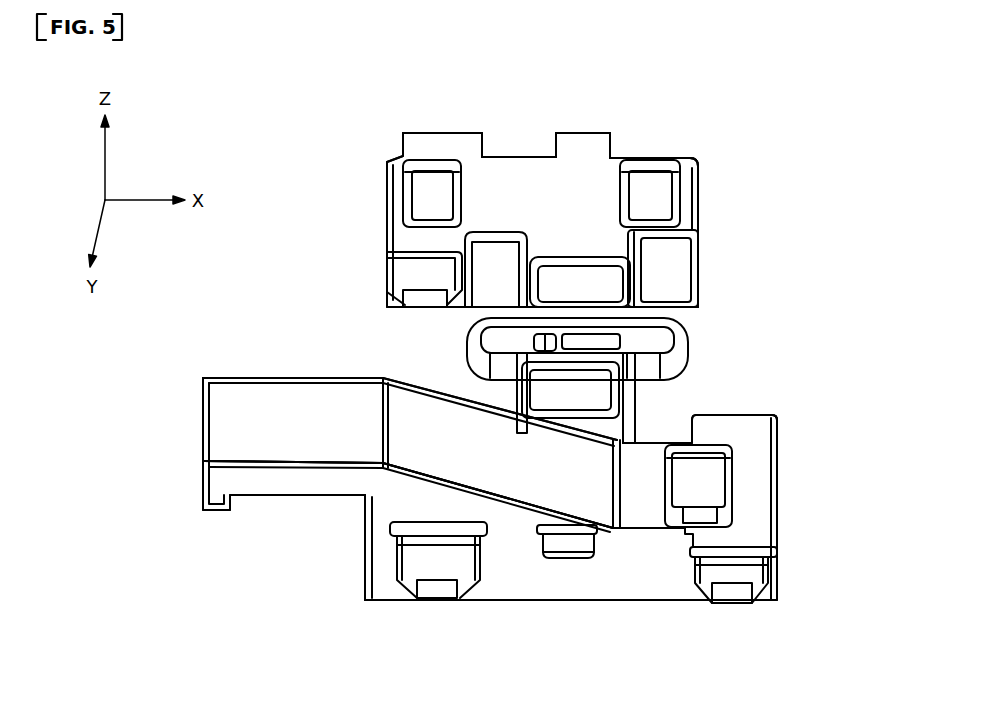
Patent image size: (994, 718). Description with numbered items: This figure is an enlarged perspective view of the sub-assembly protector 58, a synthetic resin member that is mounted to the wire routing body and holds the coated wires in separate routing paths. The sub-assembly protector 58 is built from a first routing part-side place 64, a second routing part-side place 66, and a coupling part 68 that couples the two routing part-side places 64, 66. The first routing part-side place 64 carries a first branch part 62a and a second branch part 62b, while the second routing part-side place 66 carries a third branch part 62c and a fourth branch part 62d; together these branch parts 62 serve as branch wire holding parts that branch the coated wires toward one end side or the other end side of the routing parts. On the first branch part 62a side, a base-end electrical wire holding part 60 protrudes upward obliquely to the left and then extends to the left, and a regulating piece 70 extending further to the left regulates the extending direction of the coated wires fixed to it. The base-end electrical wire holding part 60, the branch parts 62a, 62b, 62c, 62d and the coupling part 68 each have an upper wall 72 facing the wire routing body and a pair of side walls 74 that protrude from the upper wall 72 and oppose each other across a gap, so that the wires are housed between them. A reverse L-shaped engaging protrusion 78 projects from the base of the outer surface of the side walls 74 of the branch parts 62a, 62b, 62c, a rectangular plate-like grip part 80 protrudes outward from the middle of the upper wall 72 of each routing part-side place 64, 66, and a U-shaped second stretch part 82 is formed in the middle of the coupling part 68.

The sub-assembly protector 58 is at (397, 108).
The base-end electrical wire holding part 60 is at (187, 428).
The branch part 62 is at (863, 212).
The first branch part 62a is at (418, 503).
The second branch part 62b is at (737, 400).
The third branch part 62c is at (447, 122).
The fourth branch part 62d is at (712, 195).
The first routing part-side place 64 is at (810, 498).
The second routing part-side place 66 is at (362, 203).
The coupling part 68 is at (585, 312).
The regulating piece 70 is at (377, 376).
The upper wall 72 is at (518, 180).
The side wall 74 is at (662, 273).
The engaging protrusion 78 is at (433, 148).
The grip part 80 is at (583, 145).
The second stretch part 82 is at (516, 333).